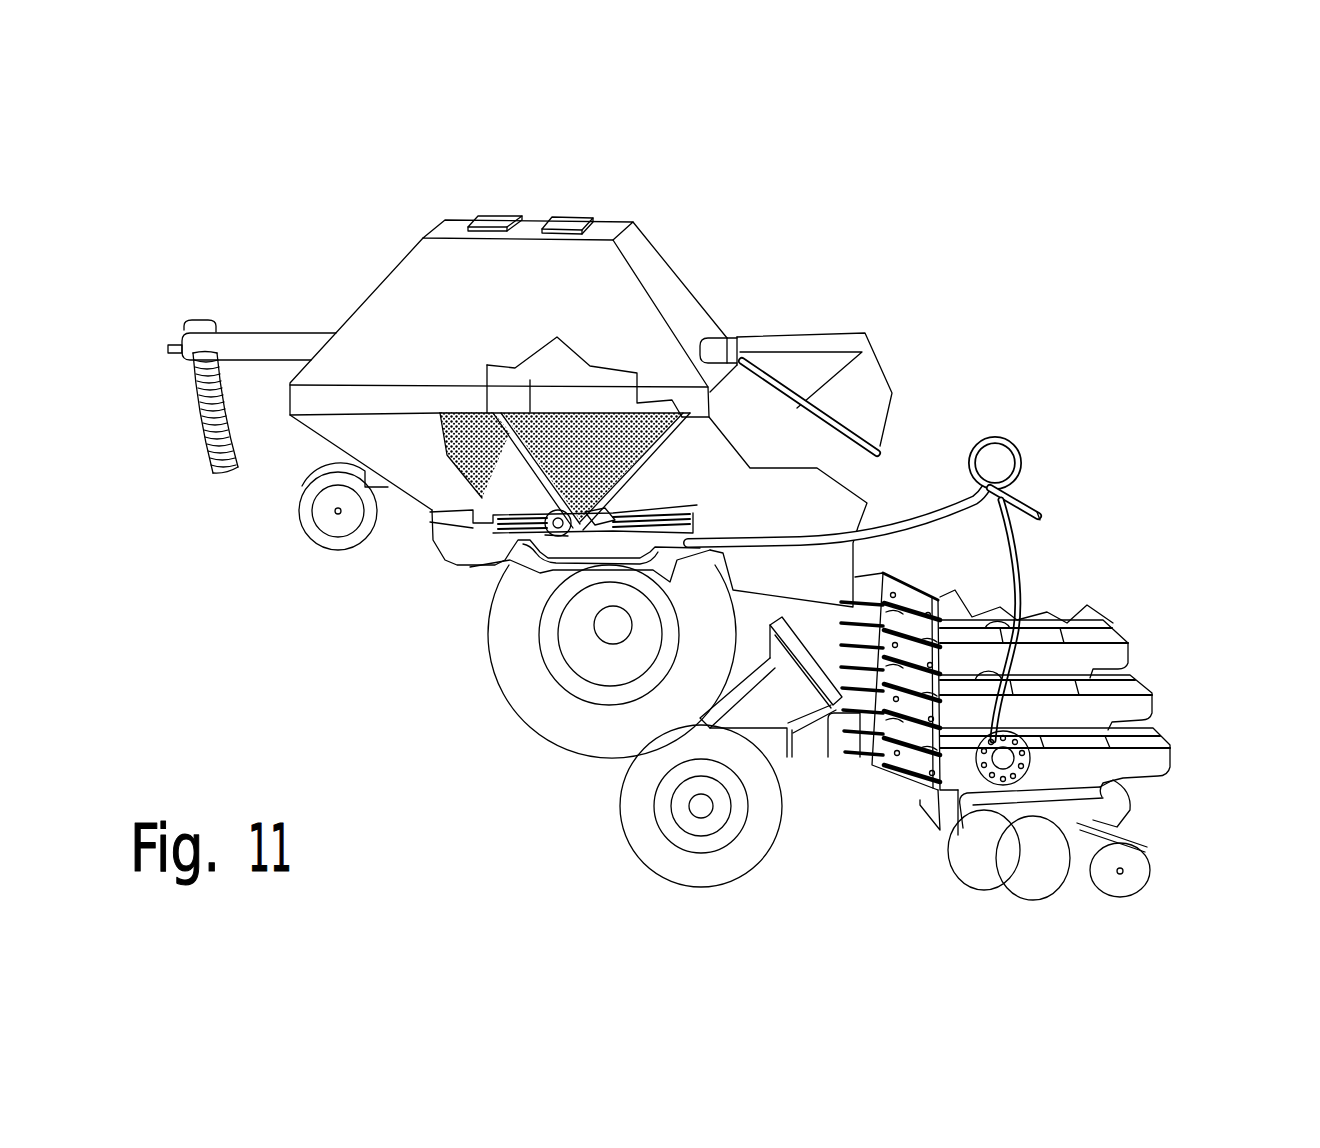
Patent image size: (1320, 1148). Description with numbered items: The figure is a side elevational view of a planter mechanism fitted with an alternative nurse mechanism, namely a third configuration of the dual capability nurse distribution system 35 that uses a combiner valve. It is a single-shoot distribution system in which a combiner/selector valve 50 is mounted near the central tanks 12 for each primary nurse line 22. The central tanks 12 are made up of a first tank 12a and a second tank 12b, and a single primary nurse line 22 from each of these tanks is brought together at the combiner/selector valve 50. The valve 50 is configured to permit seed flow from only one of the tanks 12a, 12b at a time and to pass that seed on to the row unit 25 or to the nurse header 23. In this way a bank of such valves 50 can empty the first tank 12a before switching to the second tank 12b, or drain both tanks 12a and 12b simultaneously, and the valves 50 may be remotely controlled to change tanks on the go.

The central tanks 12 is at (718, 271).
The first tank 12a is at (490, 215).
The second tank 12b is at (560, 215).
The dual capability nurse distribution system 35 is at (725, 162).
The combiner/selector valve 50 is at (645, 513).
The primary nurse line 22 is at (968, 505).
The nurse header 23 is at (1013, 503).
The row unit 25 is at (1170, 747).